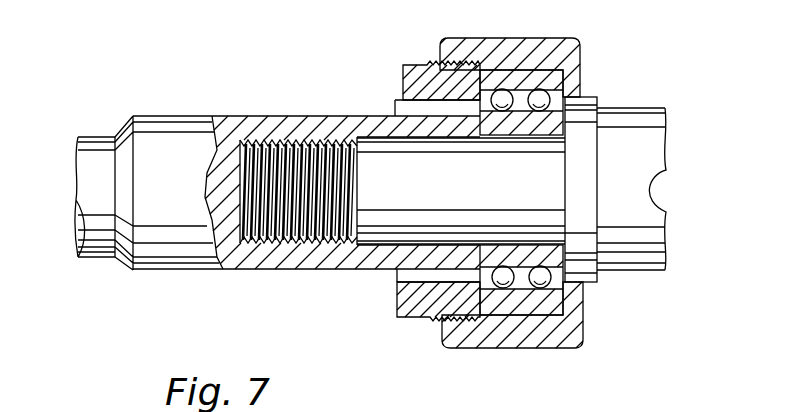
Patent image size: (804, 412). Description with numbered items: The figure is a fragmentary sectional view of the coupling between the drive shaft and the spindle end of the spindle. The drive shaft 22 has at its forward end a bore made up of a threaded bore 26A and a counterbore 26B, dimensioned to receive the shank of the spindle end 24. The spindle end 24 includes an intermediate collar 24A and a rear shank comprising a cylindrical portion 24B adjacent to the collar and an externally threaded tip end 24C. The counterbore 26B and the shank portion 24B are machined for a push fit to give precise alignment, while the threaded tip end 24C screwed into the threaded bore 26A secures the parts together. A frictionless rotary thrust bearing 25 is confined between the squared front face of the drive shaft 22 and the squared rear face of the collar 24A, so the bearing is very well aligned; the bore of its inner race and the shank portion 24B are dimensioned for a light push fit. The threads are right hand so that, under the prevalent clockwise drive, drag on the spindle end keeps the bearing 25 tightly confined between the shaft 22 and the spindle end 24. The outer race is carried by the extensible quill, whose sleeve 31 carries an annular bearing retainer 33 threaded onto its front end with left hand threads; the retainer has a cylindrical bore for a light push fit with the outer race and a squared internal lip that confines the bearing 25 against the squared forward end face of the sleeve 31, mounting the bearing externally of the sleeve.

The drive shaft 22 is at (93, 157).
The threaded bore 26A is at (233, 167).
The counterbore 26B is at (394, 140).
The spindle end 24 is at (638, 122).
The intermediate collar 24A is at (592, 260).
The cylindrical portion 24B is at (388, 228).
The externally threaded tip end 24C is at (318, 196).
The rotary thrust bearing 25 is at (557, 86).
The sleeve 31 is at (414, 312).
The annular bearing retainer 33 is at (573, 334).